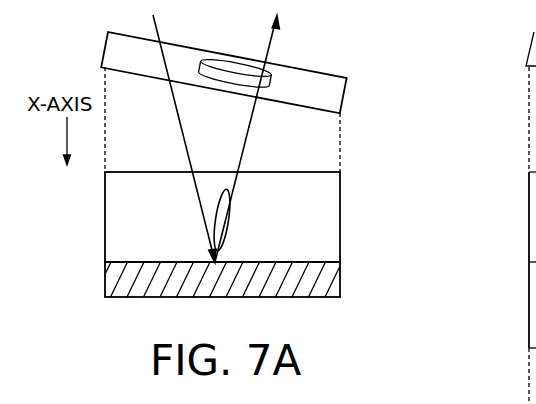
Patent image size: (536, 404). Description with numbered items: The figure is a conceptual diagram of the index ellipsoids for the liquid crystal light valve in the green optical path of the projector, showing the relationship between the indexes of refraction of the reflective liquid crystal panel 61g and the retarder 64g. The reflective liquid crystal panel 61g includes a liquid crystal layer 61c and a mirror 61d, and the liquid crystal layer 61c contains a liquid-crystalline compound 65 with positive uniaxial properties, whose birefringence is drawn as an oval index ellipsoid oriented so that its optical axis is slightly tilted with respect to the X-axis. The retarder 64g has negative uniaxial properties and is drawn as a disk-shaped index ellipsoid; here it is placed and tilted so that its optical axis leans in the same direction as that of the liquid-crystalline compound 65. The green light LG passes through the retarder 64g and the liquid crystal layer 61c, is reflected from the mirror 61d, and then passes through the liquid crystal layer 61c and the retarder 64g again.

The green light LG is at (156, 22).
The retarder 64g is at (332, 98).
The liquid-crystalline compound 65 is at (226, 217).
The liquid crystal layer 61c is at (332, 222).
The mirror 61d is at (335, 278).
The reflective liquid crystal panel 61g is at (272, 234).